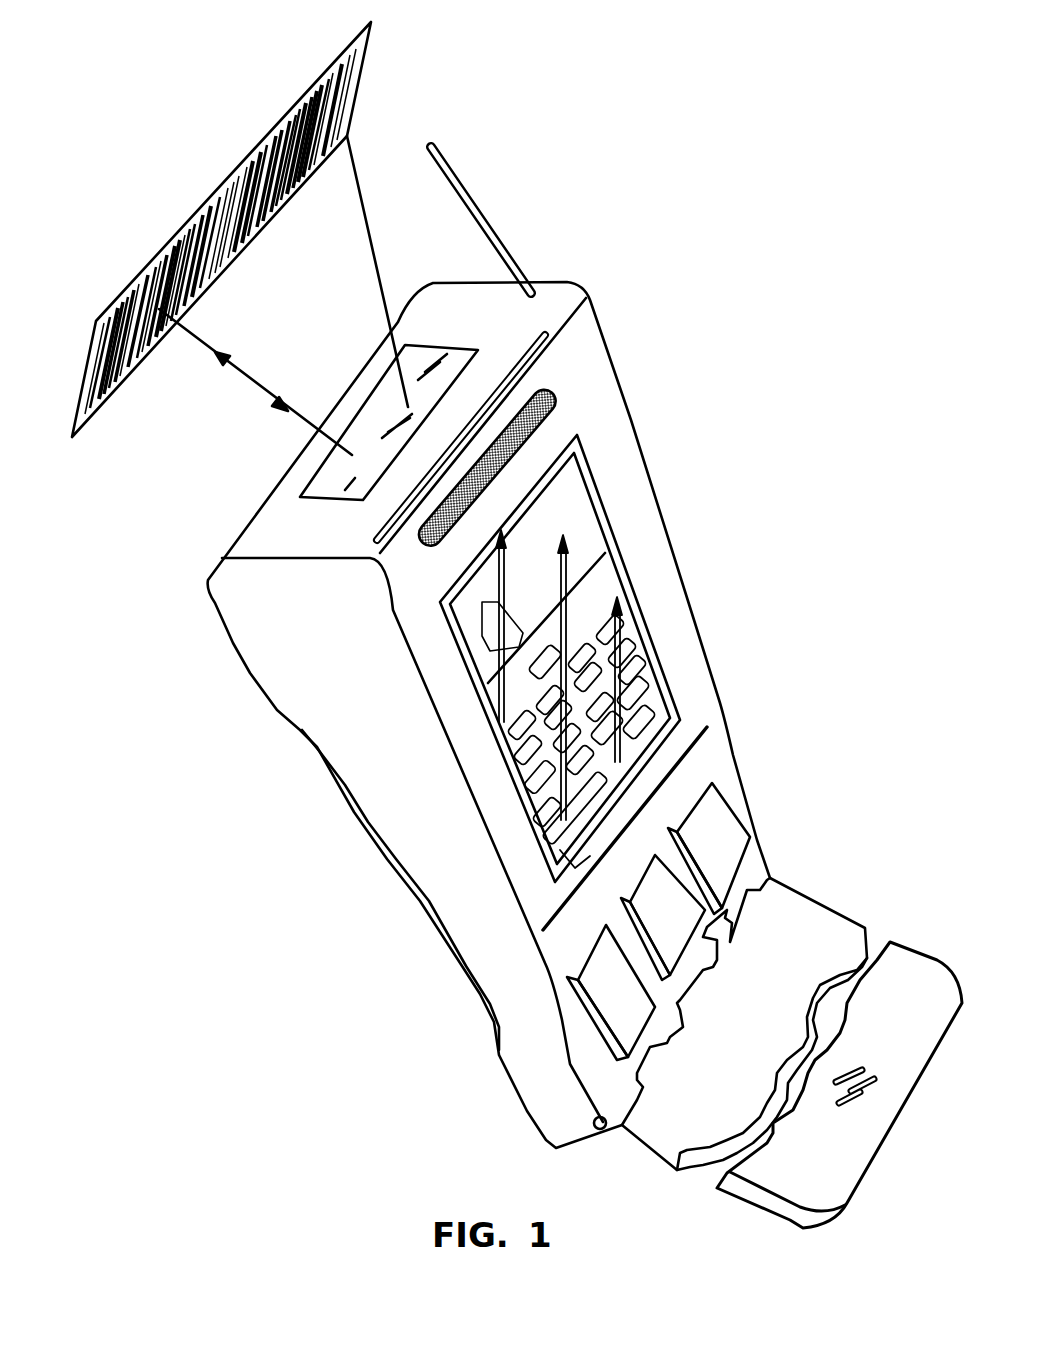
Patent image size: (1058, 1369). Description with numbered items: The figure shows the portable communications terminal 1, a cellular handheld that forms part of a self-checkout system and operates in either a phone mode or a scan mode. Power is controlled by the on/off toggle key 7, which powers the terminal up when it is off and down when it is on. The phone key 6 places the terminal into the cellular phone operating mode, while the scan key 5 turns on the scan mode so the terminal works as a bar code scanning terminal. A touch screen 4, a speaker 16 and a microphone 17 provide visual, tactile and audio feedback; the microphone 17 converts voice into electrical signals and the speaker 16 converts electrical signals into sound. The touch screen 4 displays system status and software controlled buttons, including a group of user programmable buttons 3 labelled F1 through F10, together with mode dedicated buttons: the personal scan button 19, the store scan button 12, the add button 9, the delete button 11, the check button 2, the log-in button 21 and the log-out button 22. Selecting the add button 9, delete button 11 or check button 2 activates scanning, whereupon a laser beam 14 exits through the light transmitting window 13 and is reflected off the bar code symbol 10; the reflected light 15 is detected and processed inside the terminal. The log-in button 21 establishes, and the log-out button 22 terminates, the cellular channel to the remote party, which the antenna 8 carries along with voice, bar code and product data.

The portable communications terminal 1 is at (582, 348).
The check button 2 is at (517, 761).
The group of user programmable software controlled buttons 3 is at (638, 632).
The touch screen 4 is at (618, 553).
The scan key 5 is at (693, 928).
The phone key 6 is at (723, 818).
The on/off toggle key 7 is at (570, 1059).
The antenna 8 is at (488, 212).
The add button 9 is at (555, 840).
The bar code symbol 10 is at (228, 178).
The delete button 11 is at (643, 687).
The store scan button 12 is at (657, 722).
The light transmitting window 13 is at (308, 497).
The laser beam 14 is at (215, 355).
The reflected light 15 is at (284, 406).
The speaker 16 is at (550, 400).
The microphone 17 is at (863, 1070).
The personal scan button 19 is at (560, 850).
The log-in button 21 is at (527, 794).
The log-out button 22 is at (527, 766).